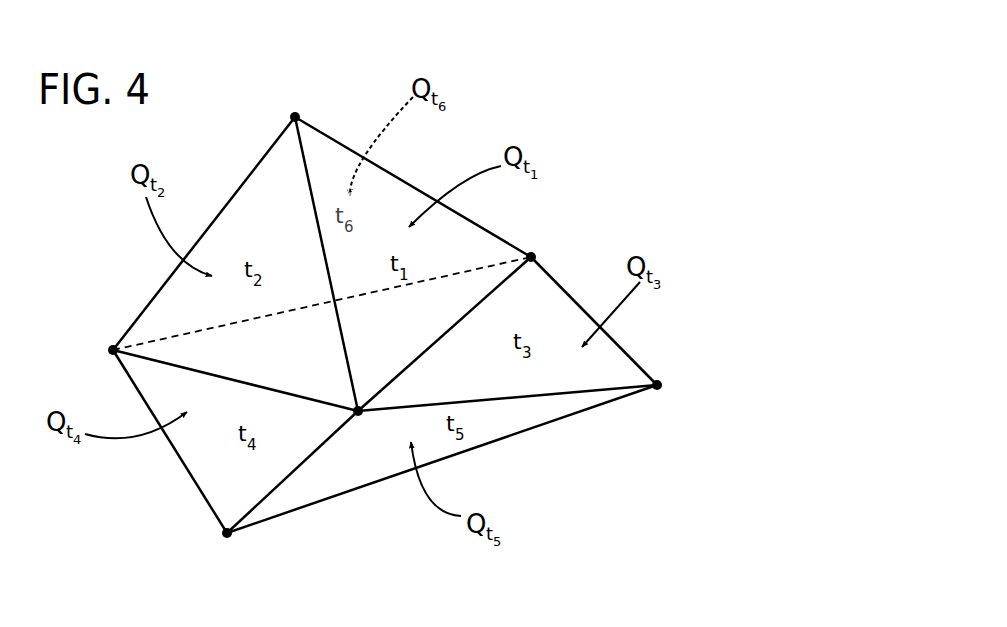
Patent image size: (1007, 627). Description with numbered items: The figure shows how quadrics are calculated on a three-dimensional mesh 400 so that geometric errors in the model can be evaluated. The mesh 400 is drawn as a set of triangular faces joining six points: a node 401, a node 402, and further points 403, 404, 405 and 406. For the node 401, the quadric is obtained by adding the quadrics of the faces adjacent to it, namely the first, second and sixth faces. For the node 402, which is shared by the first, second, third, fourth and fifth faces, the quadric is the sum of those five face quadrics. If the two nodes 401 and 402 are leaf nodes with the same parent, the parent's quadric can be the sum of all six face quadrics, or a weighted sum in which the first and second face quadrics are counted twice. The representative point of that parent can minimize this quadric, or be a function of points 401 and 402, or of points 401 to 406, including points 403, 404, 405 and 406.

The 3D mesh 400 is at (592, 83).
The node 401 is at (297, 118).
The node 402 is at (360, 412).
The point 403 is at (229, 534).
The point 404 is at (659, 386).
The point 405 is at (533, 258).
The point 406 is at (115, 351).